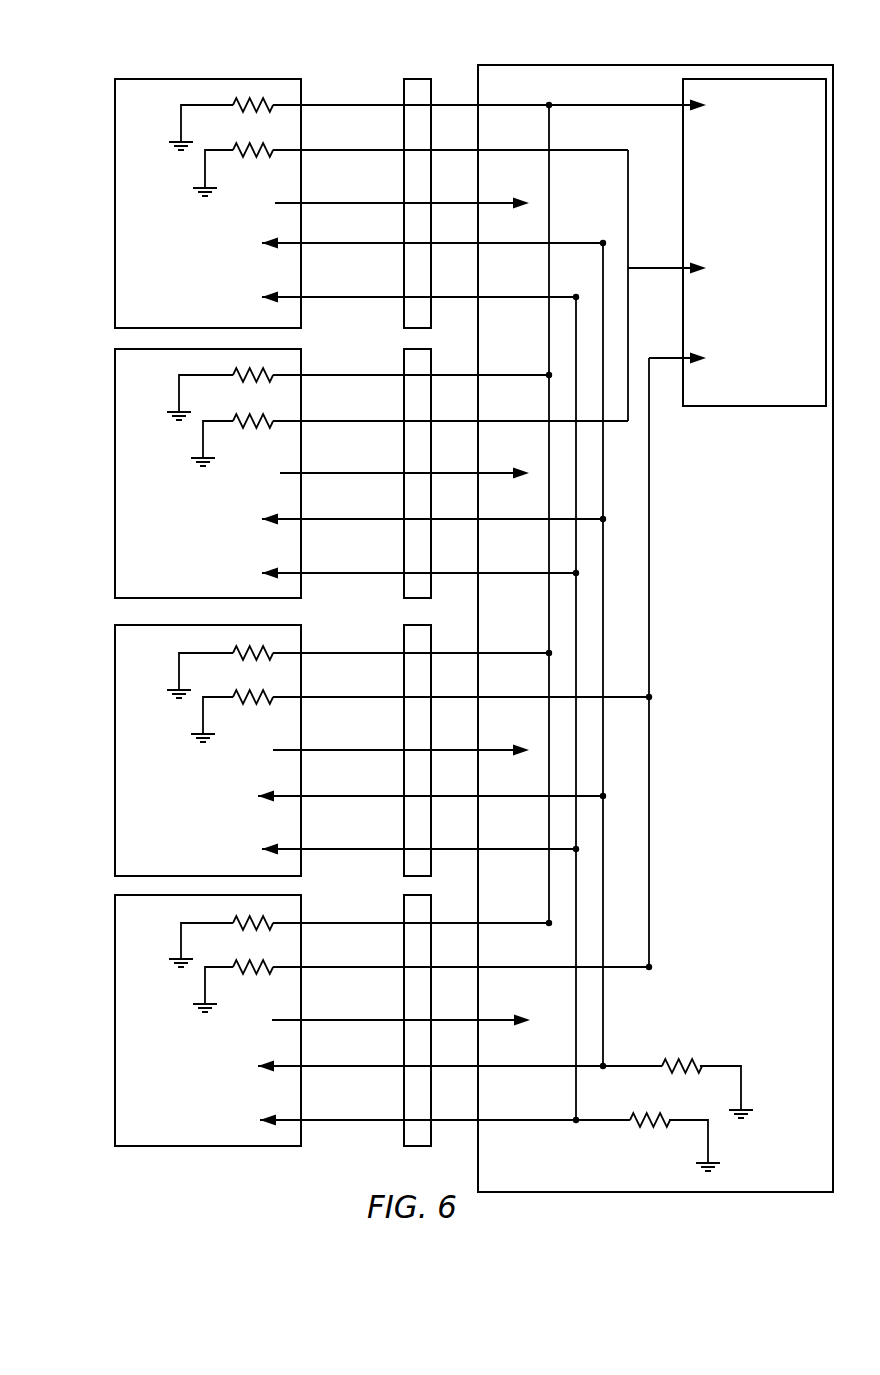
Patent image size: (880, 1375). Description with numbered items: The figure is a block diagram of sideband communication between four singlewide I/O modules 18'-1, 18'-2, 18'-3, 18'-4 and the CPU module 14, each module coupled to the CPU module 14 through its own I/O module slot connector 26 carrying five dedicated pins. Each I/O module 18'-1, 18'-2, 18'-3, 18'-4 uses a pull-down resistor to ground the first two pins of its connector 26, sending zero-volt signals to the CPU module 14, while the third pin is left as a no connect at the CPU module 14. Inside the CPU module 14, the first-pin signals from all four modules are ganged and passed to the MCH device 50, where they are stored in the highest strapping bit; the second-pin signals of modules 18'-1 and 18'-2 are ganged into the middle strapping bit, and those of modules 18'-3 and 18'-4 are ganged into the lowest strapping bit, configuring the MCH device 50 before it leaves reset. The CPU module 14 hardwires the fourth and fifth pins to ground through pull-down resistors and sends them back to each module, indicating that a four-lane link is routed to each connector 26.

The CPU module 14 is at (530, 73).
The MCH device 50 is at (745, 78).
The I/O module slot connector 26 is at (418, 78).
The singlewide I/O module 18'-1 is at (328, 203).
The singlewide I/O module 18'-2 is at (328, 473).
The singlewide I/O module 18'-3 is at (343, 718).
The singlewide I/O module 18'-4 is at (340, 988).